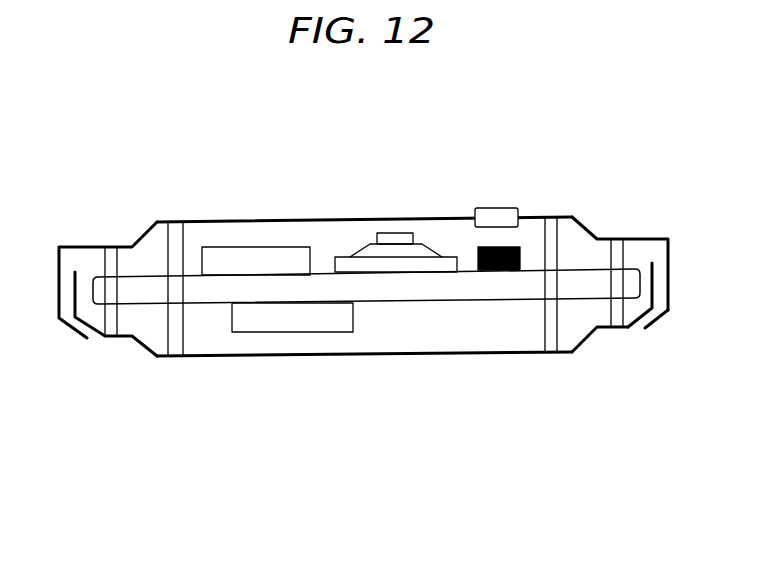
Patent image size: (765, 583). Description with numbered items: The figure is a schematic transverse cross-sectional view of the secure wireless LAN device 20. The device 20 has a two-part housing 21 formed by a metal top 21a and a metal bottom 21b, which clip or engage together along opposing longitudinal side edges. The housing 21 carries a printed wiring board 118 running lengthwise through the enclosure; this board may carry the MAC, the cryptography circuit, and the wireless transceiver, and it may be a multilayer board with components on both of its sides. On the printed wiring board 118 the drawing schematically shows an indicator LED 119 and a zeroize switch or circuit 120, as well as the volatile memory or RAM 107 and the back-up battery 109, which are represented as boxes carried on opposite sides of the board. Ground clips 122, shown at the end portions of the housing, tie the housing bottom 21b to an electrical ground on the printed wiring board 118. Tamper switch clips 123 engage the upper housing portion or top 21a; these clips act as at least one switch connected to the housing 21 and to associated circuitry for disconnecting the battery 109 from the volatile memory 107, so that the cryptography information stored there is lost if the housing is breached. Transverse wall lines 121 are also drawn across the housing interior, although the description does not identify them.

The secure wireless LAN device 20 is at (577, 118).
The two-part housing 21 is at (274, 362).
The housing top 21a is at (586, 229).
The housing bottom 21b is at (589, 336).
The volatile memory or RAM 107 is at (333, 333).
The back-up battery 109 is at (253, 247).
The printed wiring board 118 is at (212, 290).
The indicator LED 119 is at (478, 250).
The zeroize switch or circuit 120 is at (395, 240).
The partition walls 121 is at (175, 240).
The ground clips 122 is at (109, 328).
The tamper switch clips 123 is at (108, 262).